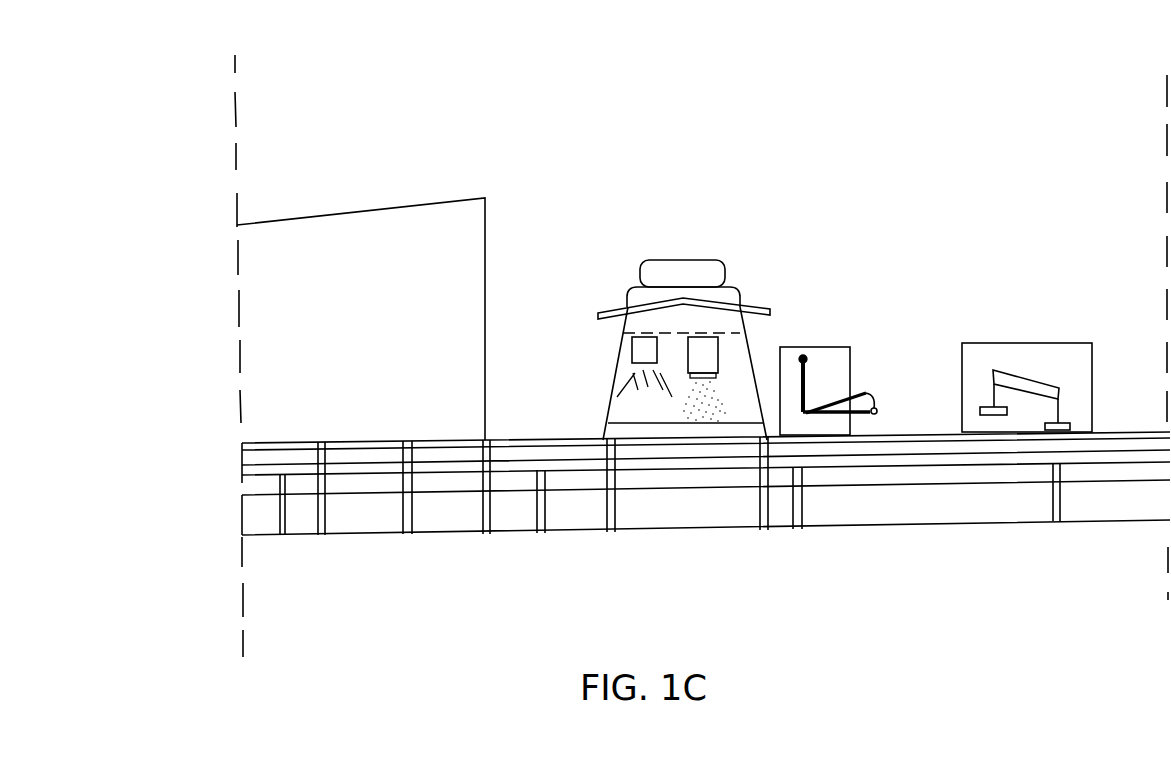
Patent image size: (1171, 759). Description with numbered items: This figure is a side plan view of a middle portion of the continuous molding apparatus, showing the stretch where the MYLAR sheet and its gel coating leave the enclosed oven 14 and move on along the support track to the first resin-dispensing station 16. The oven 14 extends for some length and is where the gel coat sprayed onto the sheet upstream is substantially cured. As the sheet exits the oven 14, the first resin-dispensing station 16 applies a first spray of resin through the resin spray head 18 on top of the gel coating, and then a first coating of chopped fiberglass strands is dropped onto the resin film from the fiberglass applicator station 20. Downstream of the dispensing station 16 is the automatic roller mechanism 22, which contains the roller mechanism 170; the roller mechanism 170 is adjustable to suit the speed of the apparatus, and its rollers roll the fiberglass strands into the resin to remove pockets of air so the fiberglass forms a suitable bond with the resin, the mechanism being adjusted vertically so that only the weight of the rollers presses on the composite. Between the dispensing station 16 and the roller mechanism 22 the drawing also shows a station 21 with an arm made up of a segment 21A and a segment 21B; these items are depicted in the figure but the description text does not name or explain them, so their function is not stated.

The oven 14 is at (354, 190).
The first resin-dispensing station 16 is at (685, 255).
The spray head 18 is at (642, 347).
The fiberglass applicator station 20 is at (707, 357).
The robotic arm station 21 is at (838, 343).
The robot arm segment 21A is at (876, 397).
The robot arm segment 21B is at (840, 411).
The automatic roller mechanism 22 is at (1027, 337).
The roller mechanism 170 is at (1040, 373).